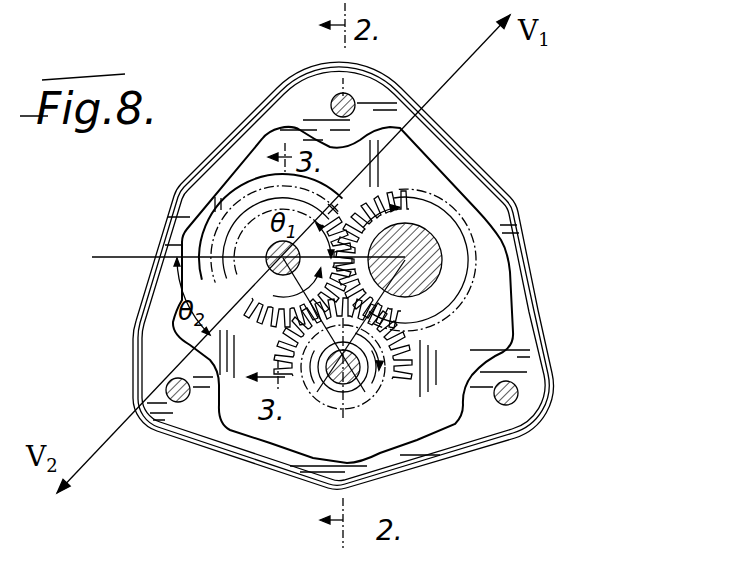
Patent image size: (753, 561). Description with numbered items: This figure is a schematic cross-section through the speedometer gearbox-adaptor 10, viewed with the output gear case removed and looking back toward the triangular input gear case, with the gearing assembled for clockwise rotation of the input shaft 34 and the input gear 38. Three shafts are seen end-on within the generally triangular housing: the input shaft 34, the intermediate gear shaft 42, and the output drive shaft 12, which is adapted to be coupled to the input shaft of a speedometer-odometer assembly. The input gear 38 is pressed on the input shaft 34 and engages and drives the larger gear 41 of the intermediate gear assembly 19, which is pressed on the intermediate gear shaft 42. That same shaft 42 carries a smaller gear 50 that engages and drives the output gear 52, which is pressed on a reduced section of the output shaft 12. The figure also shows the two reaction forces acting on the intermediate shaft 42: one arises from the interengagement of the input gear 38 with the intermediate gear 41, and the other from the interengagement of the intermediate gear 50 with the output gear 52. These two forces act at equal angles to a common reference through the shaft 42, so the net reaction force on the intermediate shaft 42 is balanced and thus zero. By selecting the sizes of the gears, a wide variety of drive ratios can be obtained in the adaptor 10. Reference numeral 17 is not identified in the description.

The adaptor 10 is at (221, 478).
The output drive shaft 12 is at (428, 282).
The housing side wall 17 is at (148, 296).
The intermediate gear assembly 19 is at (211, 203).
The input shaft 34 is at (358, 380).
The input gear 38 is at (299, 382).
The larger gear 41 is at (325, 378).
The intermediate gear shaft 42 is at (200, 241).
The smaller gear 50 is at (335, 206).
The output gear 52 is at (374, 207).